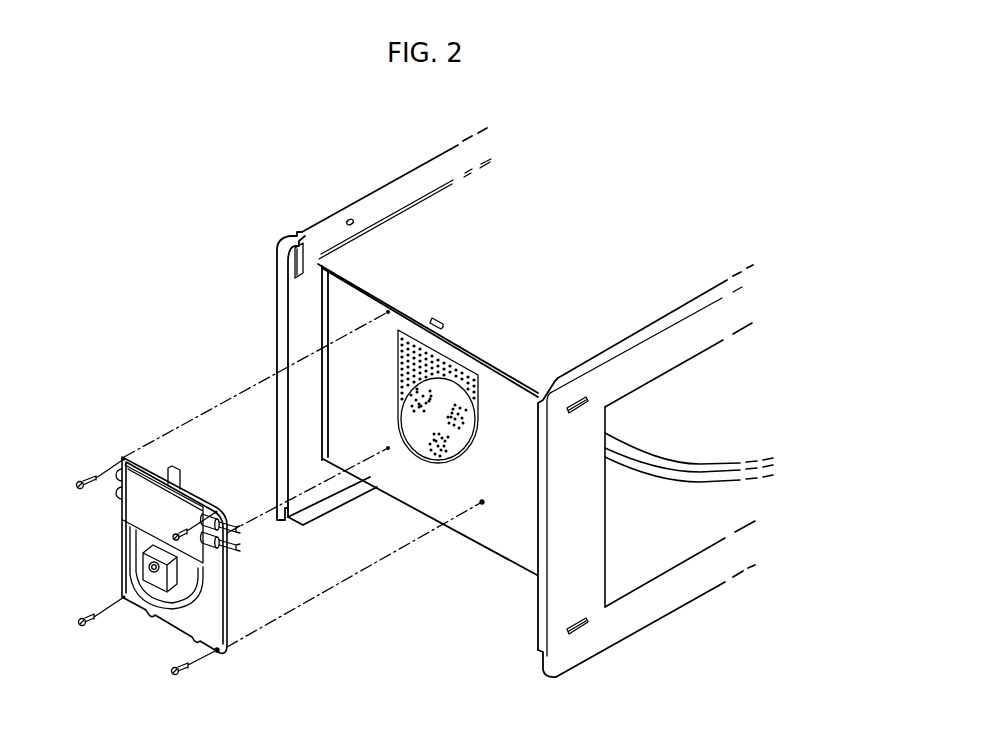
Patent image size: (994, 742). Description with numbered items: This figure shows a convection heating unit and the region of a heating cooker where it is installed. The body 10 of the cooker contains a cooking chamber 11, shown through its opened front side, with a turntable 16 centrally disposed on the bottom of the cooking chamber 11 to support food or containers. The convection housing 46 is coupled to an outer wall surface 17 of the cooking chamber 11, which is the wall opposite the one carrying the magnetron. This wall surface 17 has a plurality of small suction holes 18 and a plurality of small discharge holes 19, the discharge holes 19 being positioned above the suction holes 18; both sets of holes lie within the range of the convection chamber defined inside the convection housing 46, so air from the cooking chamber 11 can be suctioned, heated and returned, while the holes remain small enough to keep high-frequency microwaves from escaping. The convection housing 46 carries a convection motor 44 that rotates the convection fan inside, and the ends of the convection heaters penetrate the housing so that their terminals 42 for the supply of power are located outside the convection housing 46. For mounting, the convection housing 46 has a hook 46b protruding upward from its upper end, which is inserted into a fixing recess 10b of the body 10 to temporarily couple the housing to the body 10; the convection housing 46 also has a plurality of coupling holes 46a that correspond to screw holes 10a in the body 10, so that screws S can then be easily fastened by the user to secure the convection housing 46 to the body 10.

The body 10 is at (561, 597).
The screw holes 10a is at (482, 504).
The fixing recess 10b is at (433, 322).
The cooking chamber 11 is at (617, 557).
The turntable 16 is at (737, 480).
The outer wall surface 17 is at (512, 537).
The suction holes 18 is at (413, 406).
The discharge holes 19 is at (409, 338).
The terminals 42 is at (237, 529).
The convection motor 44 is at (160, 584).
The convection housing 46 is at (219, 587).
The coupling holes 46a is at (217, 651).
The hook 46b is at (173, 466).
The screws S is at (80, 623).